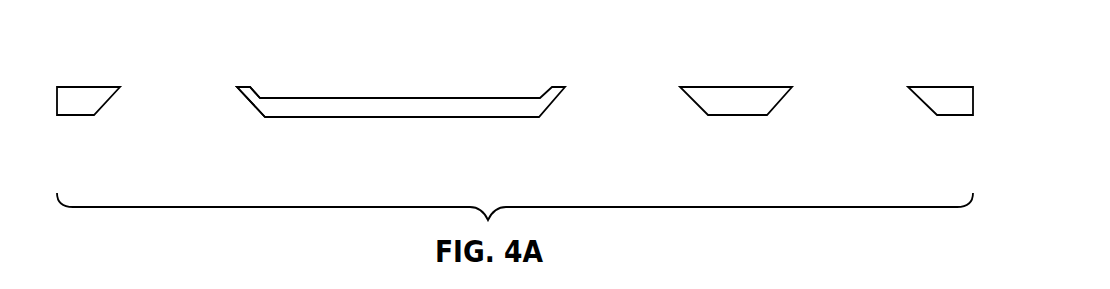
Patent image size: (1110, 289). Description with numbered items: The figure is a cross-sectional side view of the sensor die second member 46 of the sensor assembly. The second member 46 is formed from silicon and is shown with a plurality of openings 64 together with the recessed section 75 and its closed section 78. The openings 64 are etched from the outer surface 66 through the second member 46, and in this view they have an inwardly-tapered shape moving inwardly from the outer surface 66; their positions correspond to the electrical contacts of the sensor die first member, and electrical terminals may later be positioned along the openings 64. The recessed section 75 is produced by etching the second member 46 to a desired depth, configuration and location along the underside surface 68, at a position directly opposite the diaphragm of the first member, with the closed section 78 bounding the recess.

The sensor die second member 46 is at (515, 97).
The openings 64 is at (108, 102).
The outer surface 66 is at (75, 115).
The underside surface 68 is at (243, 87).
The recessed section 75 is at (324, 122).
The closed section 78 is at (430, 107).